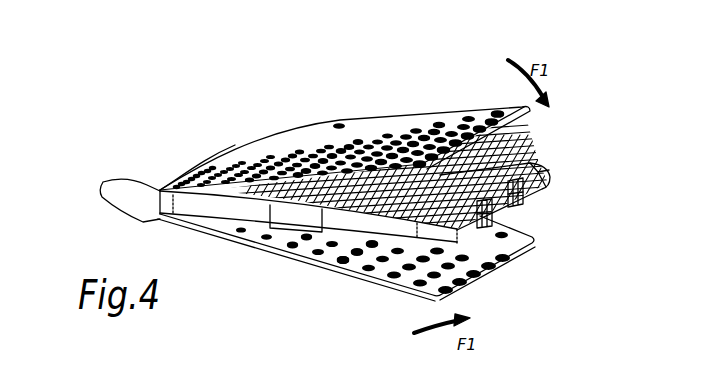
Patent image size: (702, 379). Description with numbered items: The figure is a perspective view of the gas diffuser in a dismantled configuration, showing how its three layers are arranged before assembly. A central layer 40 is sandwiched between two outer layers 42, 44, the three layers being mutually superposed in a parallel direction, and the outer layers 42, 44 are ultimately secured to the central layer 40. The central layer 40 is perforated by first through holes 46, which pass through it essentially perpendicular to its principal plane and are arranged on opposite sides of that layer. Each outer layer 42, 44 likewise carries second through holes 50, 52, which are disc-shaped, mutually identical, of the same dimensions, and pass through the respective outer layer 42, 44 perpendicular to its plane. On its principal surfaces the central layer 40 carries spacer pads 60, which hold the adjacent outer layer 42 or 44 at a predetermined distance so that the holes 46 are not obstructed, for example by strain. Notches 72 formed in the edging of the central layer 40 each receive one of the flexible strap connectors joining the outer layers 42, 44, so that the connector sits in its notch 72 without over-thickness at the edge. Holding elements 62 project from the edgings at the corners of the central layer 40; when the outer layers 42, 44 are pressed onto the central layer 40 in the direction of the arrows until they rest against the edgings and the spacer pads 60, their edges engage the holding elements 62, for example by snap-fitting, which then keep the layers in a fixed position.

The central layer 40 is at (292, 222).
The outer layer 42 is at (428, 113).
The outer layer 44 is at (393, 288).
The first through holes 46 is at (285, 190).
The second through holes 50 is at (344, 118).
The second through holes 52 is at (357, 275).
The spacer pads 60 is at (468, 163).
The holding element 62 is at (104, 182).
The notches 72 is at (492, 224).